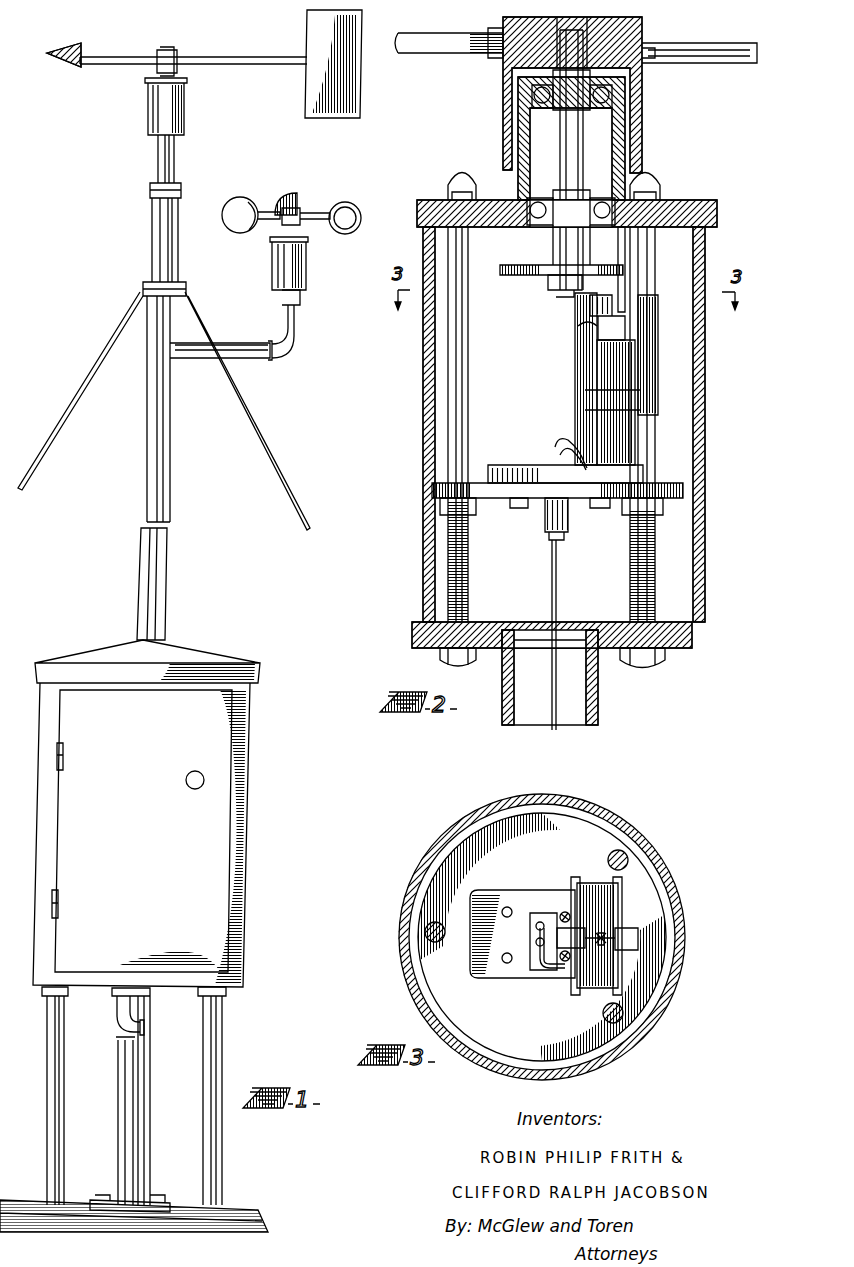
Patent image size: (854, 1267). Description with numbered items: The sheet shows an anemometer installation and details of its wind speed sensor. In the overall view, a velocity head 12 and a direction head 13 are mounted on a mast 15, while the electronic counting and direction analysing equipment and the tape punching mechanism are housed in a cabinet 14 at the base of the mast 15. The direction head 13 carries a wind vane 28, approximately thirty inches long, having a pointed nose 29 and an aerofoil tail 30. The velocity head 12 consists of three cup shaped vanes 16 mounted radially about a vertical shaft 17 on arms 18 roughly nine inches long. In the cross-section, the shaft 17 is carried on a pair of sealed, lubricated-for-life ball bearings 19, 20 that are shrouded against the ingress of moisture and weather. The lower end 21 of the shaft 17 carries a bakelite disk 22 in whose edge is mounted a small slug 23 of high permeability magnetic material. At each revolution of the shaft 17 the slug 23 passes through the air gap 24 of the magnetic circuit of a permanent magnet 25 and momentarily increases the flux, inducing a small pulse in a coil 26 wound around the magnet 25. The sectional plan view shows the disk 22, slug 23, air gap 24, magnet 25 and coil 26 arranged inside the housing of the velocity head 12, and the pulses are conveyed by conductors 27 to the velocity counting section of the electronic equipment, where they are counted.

In FIG. 1, the velocity head 12 is at (276, 262).
In FIG. 2, the velocity head 12 is at (695, 377).
In FIG. 3, the velocity head 12 is at (645, 840).
In FIG. 1, the direction head 13 is at (152, 100).
In FIG. 1, the cabinet 14 is at (238, 834).
In FIG. 1, the mast 15 is at (146, 478).
In FIG. 1, the cup shaped vanes 16 is at (298, 202).
In FIG. 2, the vertical shaft 17 is at (575, 140).
In FIG. 1, the arms 18 is at (262, 226).
In FIG. 2, the arms 18 is at (722, 60).
In FIG. 2, the ball bearing 19 is at (615, 99).
In FIG. 2, the ball bearing 20 is at (535, 222).
In FIG. 2, the lower end of shaft 21 is at (562, 240).
In FIG. 2, the bakelite disk 22 is at (523, 270).
In FIG. 2, the slug 23 is at (626, 292).
In FIG. 3, the slug 23 is at (600, 936).
In FIG. 2, the air gap 24 is at (590, 303).
In FIG. 3, the air gap 24 is at (604, 942).
In FIG. 2, the permanent magnet 25 is at (580, 326).
In FIG. 3, the permanent magnet 25 is at (565, 928).
In FIG. 2, the coil 26 is at (597, 417).
In FIG. 3, the coil 26 is at (590, 884).
In FIG. 2, the conductors 27 is at (556, 448).
In FIG. 3, the conductors 27 is at (548, 970).
In FIG. 1, the wind vane 28 is at (247, 57).
In FIG. 1, the pointed nose 29 is at (74, 69).
In FIG. 1, the aerofoil tail 30 is at (308, 30).